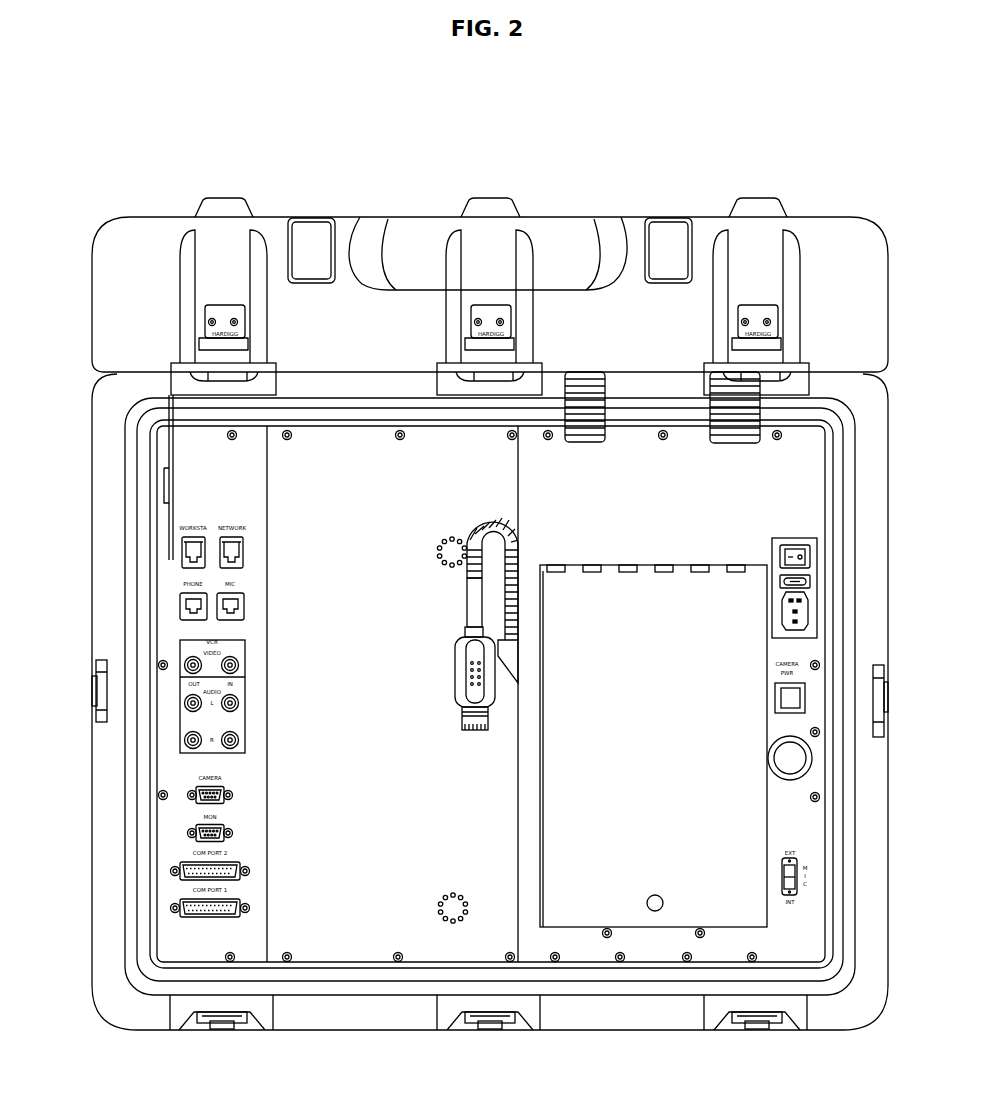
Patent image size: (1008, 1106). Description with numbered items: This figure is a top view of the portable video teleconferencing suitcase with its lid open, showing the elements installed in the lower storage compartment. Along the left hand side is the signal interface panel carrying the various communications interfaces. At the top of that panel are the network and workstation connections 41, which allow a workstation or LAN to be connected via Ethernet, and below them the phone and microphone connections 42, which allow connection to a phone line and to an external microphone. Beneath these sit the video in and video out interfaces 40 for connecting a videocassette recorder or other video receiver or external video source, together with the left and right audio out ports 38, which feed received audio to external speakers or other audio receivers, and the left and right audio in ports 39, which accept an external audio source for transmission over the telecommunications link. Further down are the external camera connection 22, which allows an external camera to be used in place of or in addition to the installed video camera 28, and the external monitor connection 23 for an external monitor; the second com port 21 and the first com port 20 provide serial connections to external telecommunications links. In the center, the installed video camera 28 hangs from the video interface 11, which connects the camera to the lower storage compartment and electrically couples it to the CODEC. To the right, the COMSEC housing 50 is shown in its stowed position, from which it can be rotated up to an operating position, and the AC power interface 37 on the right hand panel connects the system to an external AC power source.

The video interface 11 is at (508, 655).
The Com Port 1 20 is at (177, 897).
The Com Port 2 21 is at (177, 860).
The external camera connection 22 is at (191, 782).
The external monitor connection 23 is at (191, 818).
The installed video camera 28 is at (452, 688).
The AC power interface 37 is at (819, 586).
The left and right audio out ports 38 is at (182, 733).
The left and right audio in ports 39 is at (242, 707).
The video in and video out interfaces 40 is at (182, 660).
The network and workstation connections 41 is at (179, 556).
The phone and microphone connections 42 is at (177, 603).
The COMSEC housing 50 is at (645, 897).